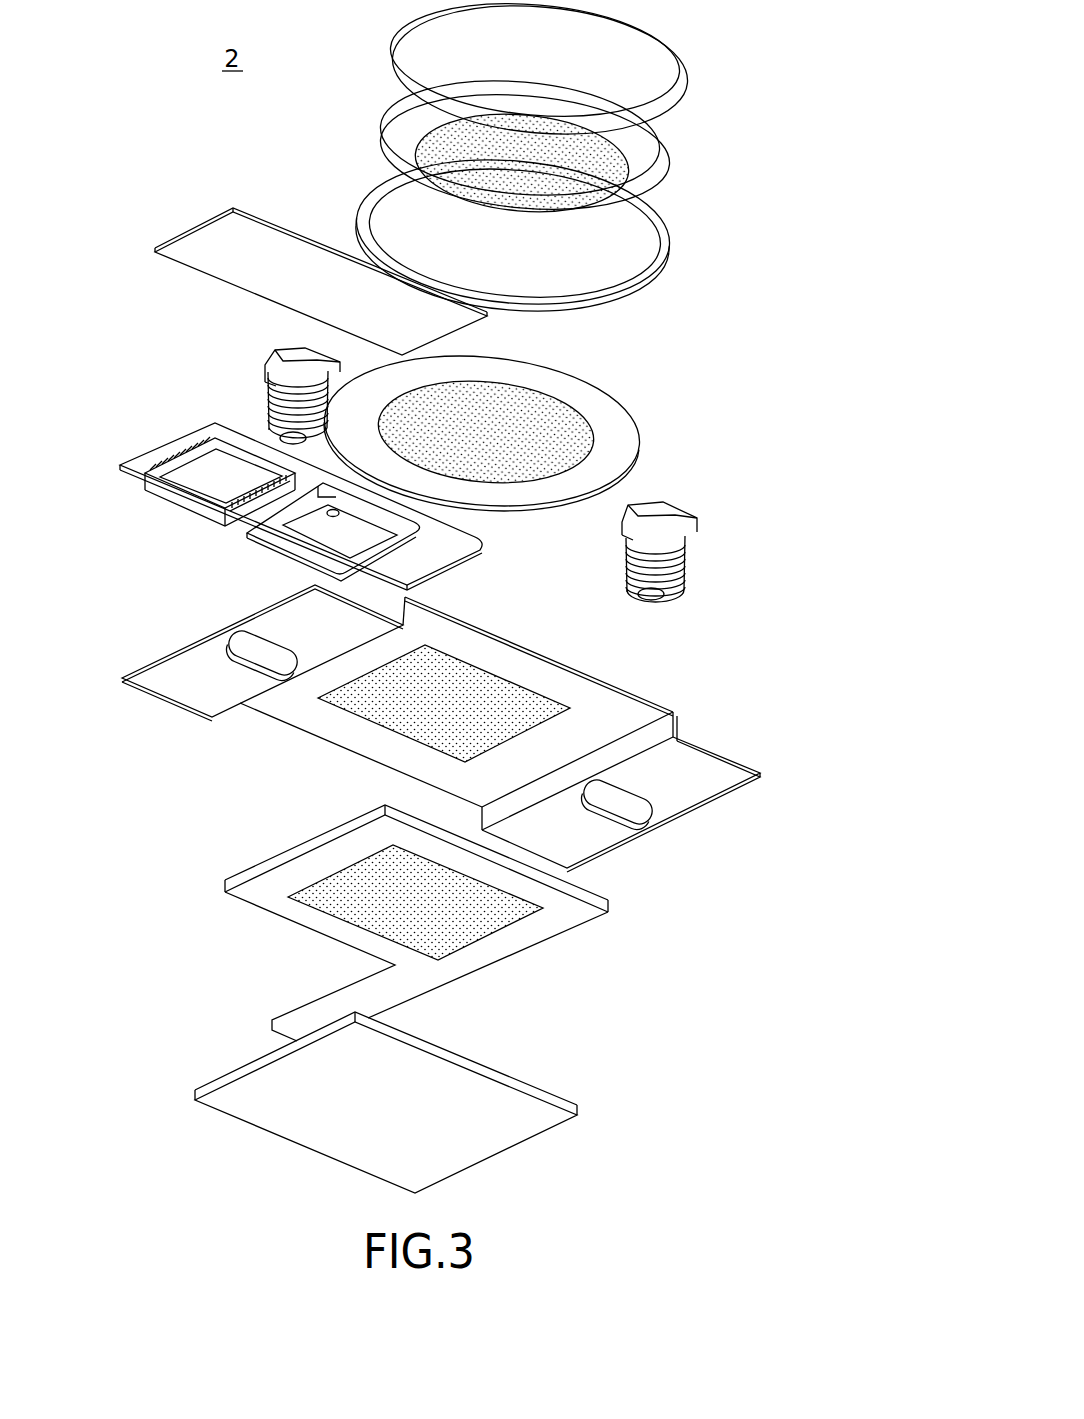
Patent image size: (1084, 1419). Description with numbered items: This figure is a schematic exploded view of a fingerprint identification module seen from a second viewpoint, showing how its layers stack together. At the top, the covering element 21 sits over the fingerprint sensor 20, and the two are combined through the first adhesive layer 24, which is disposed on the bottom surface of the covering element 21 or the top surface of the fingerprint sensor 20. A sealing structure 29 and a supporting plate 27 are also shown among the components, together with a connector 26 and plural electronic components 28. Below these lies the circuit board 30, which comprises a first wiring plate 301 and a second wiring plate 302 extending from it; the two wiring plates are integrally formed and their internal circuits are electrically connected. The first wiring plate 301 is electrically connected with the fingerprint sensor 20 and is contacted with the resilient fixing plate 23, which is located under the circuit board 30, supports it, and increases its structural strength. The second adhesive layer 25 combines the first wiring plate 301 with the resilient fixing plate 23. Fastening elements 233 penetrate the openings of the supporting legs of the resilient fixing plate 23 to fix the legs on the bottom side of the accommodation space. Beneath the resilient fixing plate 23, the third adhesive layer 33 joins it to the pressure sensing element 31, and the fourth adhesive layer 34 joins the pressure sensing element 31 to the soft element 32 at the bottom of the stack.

The covering element 21 is at (650, 44).
The fingerprint sensor 20 is at (553, 163).
The first adhesive layer 24 is at (503, 195).
The sealing structure 29 is at (665, 242).
The supporting plate 27 is at (196, 257).
The fastening element 233 is at (291, 357).
The circuit board 30 is at (515, 435).
The first wiring plate 301 is at (633, 420).
The second adhesive layer 25 is at (525, 470).
The second wiring plate 302 is at (158, 440).
The connector 26 is at (192, 495).
The electronic component 28 is at (278, 542).
The resilient fixing plate 23 is at (441, 728).
The third adhesive layer 33 is at (378, 712).
The pressure sensing element 31 is at (416, 923).
The fourth adhesive layer 34 is at (348, 902).
The soft element 32 is at (497, 1067).